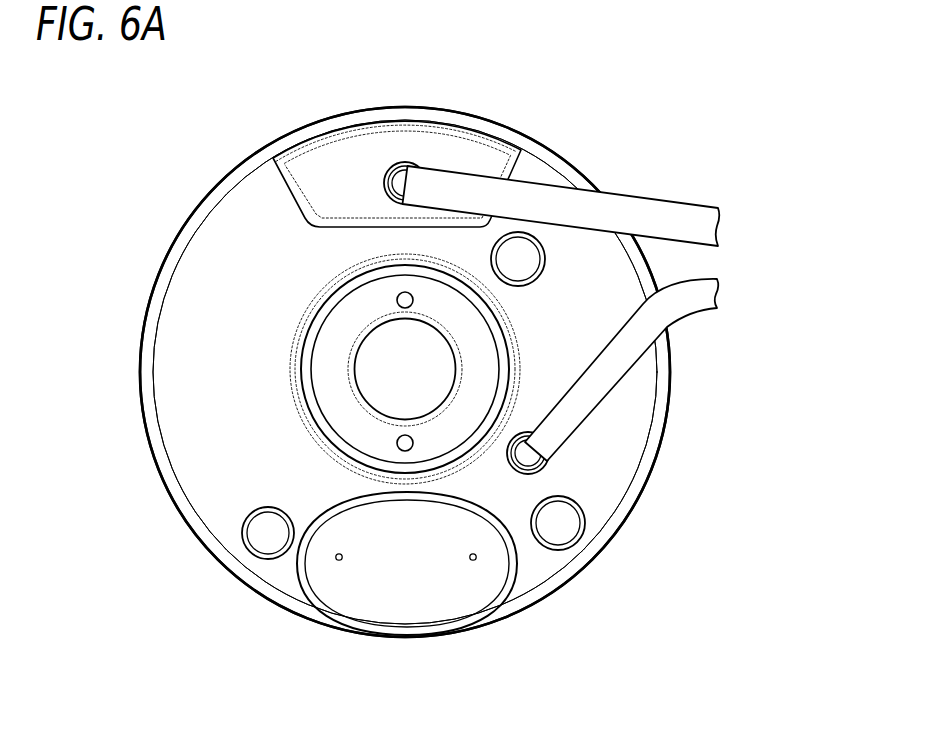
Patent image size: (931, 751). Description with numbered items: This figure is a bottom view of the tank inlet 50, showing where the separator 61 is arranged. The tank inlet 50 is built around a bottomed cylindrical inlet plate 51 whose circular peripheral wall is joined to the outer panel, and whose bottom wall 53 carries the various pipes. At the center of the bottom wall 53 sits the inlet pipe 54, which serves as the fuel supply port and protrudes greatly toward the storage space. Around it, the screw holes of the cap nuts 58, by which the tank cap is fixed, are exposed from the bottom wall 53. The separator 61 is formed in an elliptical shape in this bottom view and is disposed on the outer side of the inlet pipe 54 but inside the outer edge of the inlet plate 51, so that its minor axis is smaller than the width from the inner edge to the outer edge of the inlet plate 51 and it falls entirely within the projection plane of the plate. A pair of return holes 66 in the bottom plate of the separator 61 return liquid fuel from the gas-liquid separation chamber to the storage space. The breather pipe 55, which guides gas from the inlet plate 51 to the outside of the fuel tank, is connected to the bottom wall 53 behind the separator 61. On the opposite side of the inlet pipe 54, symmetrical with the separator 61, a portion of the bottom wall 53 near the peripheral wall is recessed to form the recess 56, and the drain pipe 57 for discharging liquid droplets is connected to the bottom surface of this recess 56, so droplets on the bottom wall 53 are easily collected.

The tank inlet 50 is at (591, 103).
The inlet plate 51 is at (187, 218).
The bottom wall 53 is at (607, 473).
The inlet pipe 54 is at (512, 325).
The breather pipe 55 is at (693, 318).
The recess 56 is at (312, 160).
The drain pipe 57 is at (657, 213).
The cap nuts 58 is at (523, 248).
The separator 61 is at (415, 626).
The return holes 66 is at (338, 562).